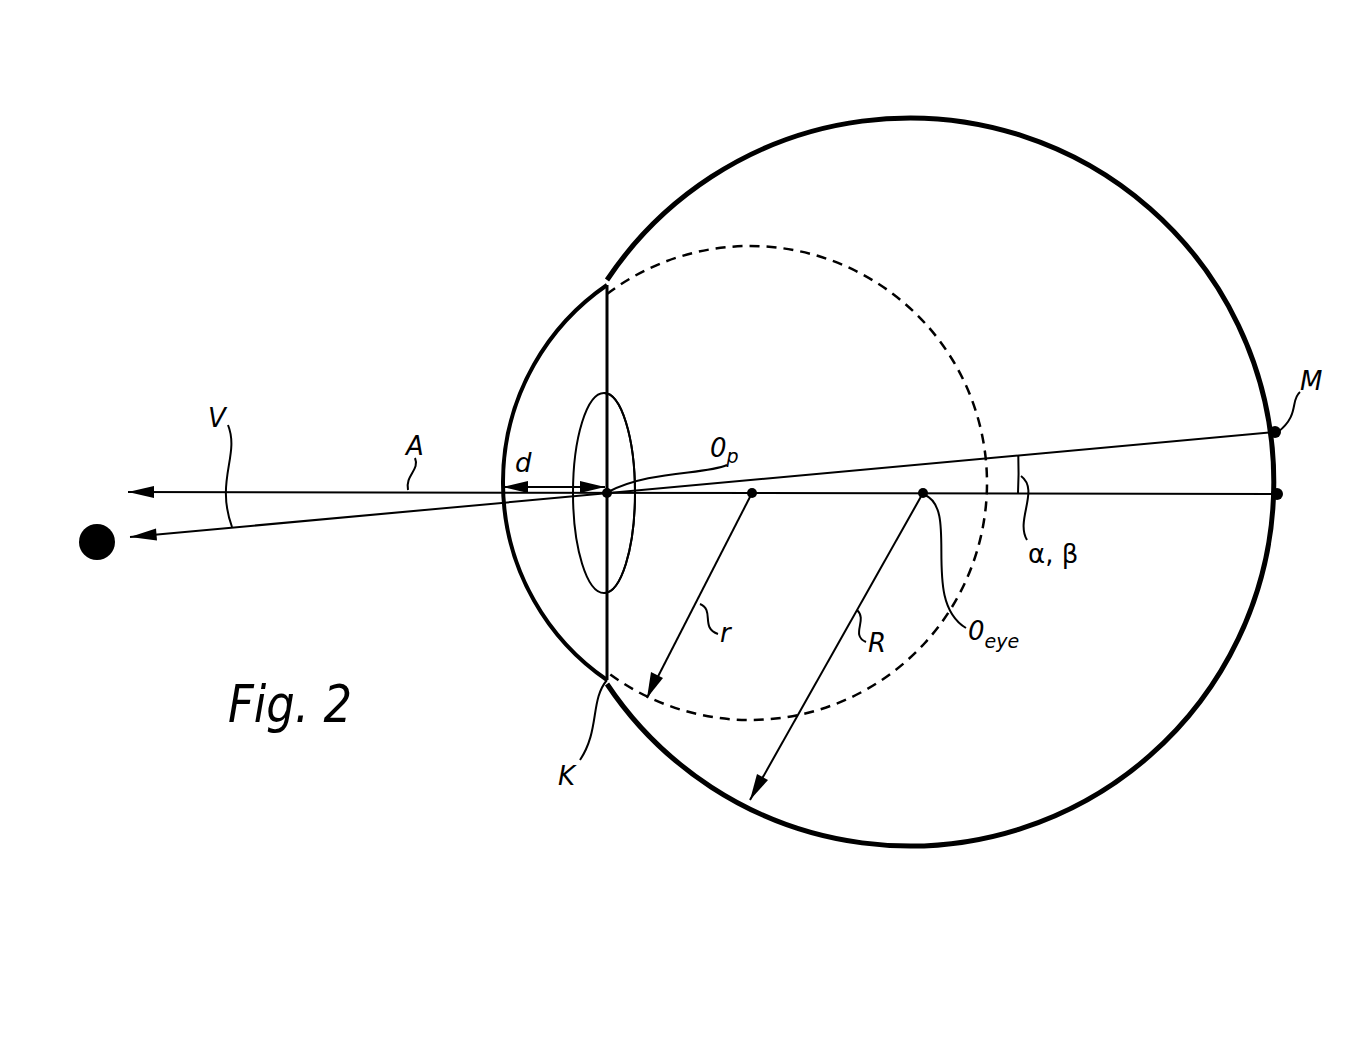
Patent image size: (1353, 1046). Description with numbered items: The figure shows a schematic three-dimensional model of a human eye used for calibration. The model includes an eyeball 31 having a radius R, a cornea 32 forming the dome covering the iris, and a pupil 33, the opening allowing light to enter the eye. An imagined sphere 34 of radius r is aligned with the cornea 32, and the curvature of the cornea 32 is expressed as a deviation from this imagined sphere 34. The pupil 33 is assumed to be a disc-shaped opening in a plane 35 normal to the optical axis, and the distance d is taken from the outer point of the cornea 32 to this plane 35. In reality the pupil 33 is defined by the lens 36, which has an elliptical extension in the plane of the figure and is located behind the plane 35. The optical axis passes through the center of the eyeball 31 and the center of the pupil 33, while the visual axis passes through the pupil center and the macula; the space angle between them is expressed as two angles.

The eyeball 31 is at (1048, 142).
The cornea 32 is at (506, 403).
The pupil 33 is at (598, 445).
The imagined sphere 34 is at (891, 296).
The plane 35 is at (607, 345).
The lens 36 is at (636, 432).